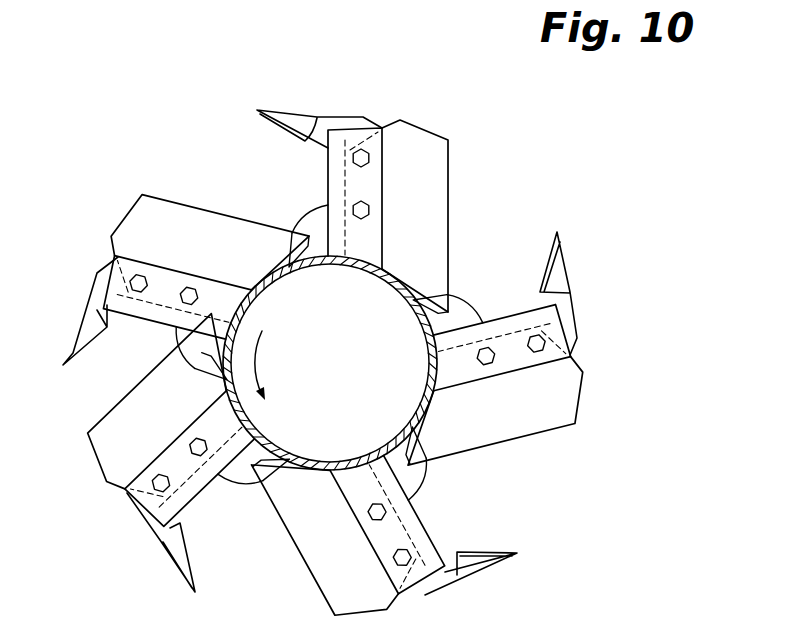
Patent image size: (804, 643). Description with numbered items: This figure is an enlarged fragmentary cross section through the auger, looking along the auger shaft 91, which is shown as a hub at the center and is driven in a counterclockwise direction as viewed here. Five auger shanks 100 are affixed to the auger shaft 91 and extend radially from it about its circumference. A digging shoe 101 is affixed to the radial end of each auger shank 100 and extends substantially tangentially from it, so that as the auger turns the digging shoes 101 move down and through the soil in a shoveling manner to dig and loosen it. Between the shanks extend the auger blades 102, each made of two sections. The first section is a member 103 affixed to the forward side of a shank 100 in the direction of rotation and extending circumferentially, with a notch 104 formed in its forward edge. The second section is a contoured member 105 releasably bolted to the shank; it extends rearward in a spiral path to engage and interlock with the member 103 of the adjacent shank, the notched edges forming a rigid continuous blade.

The auger shaft 91 is at (265, 437).
The auger shank 100 is at (331, 178).
The digging shoe 101 is at (338, 122).
The auger blade 102 is at (338, 364).
The member 103 is at (313, 207).
The notch 104 is at (290, 249).
The contoured member 105 is at (449, 162).